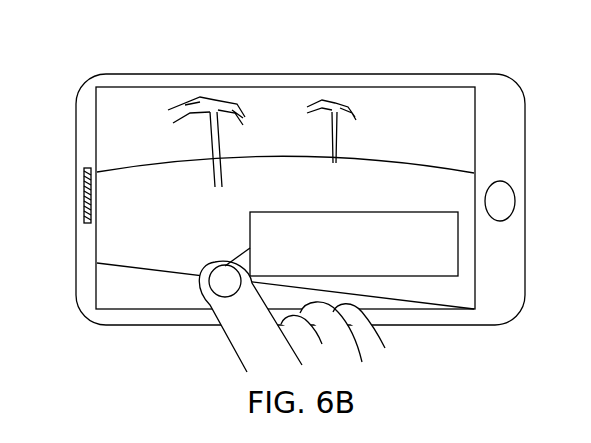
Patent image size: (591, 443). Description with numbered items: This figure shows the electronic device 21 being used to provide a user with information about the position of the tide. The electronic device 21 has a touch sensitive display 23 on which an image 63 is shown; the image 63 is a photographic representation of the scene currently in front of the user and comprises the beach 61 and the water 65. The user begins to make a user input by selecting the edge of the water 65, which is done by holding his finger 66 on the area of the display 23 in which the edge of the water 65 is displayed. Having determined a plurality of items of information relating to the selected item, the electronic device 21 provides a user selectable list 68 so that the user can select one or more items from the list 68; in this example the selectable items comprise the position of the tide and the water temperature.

The electronic device 21 is at (335, 73).
The image 63 is at (388, 95).
The beach 61 is at (457, 192).
The touch sensitive display 23 is at (232, 95).
The water 65 is at (172, 298).
The user selectable list 68 is at (458, 242).
The finger 66 is at (253, 332).